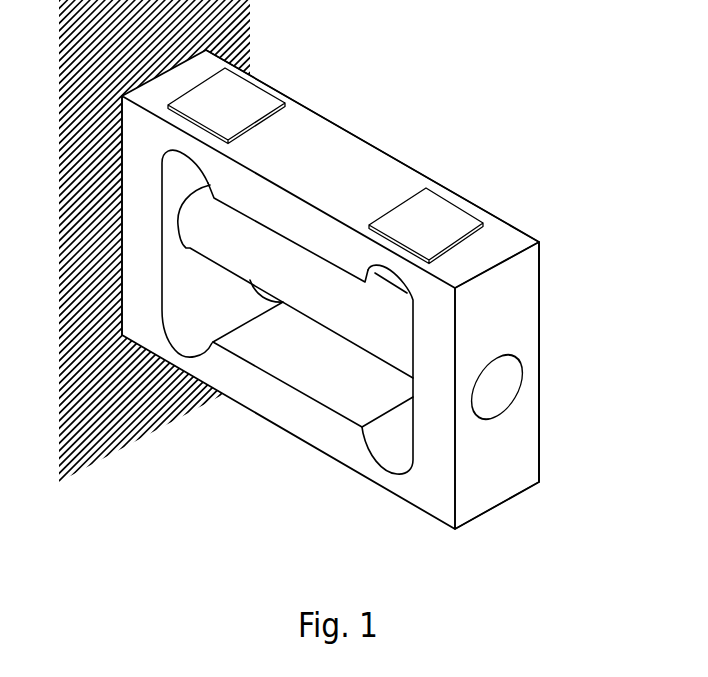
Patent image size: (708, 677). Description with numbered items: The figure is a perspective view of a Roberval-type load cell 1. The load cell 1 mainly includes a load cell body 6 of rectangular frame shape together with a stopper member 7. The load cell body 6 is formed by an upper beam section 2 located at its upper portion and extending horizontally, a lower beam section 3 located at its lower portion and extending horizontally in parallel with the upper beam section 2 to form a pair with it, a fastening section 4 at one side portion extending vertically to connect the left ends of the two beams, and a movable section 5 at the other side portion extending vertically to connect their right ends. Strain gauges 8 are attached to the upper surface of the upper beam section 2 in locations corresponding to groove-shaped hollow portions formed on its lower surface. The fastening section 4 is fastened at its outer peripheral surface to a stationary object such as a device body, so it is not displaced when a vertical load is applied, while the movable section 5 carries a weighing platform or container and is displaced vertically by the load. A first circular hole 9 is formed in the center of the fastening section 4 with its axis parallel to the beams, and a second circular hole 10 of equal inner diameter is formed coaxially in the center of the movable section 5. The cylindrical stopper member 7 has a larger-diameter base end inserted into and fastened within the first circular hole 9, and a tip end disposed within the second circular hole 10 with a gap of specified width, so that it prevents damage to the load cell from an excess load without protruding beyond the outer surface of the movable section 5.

The load cell 1 is at (556, 169).
The upper beam section 2 is at (345, 150).
The lower beam section 3 is at (333, 442).
The fastening section 4 is at (133, 212).
The movable section 5 is at (515, 447).
The load cell body 6 is at (551, 296).
The stopper member 7 is at (298, 283).
The strain gauges 8 is at (237, 95).
The first circular hole 9 is at (190, 247).
The second circular hole 10 is at (510, 388).